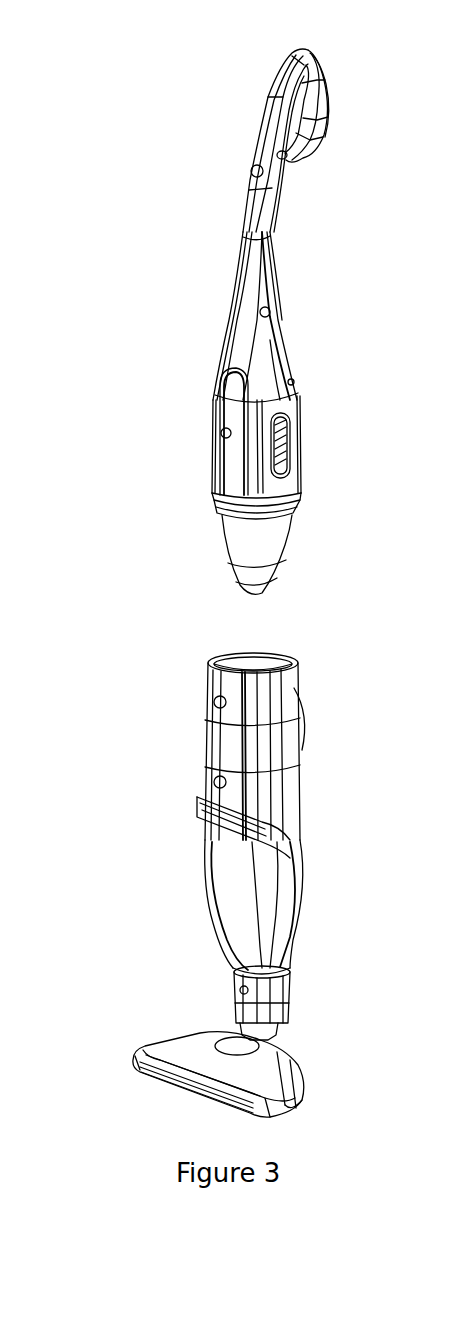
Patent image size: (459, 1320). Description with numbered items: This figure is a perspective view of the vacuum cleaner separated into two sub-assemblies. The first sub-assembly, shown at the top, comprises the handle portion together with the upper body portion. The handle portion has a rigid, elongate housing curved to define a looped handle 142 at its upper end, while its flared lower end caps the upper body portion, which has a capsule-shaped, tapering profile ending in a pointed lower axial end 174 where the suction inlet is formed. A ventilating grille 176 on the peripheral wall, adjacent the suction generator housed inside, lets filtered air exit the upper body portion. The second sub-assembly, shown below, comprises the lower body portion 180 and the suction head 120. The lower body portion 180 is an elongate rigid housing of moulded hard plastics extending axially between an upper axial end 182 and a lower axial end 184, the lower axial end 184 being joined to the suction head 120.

The looped handle 142 is at (235, 112).
The ventilating grille 176 is at (300, 432).
The lower axial end 174 is at (306, 572).
The upper axial end 182 is at (182, 661).
The lower body portion 180 is at (245, 846).
The lower axial end 184 is at (212, 1007).
The suction head 120 is at (152, 1102).